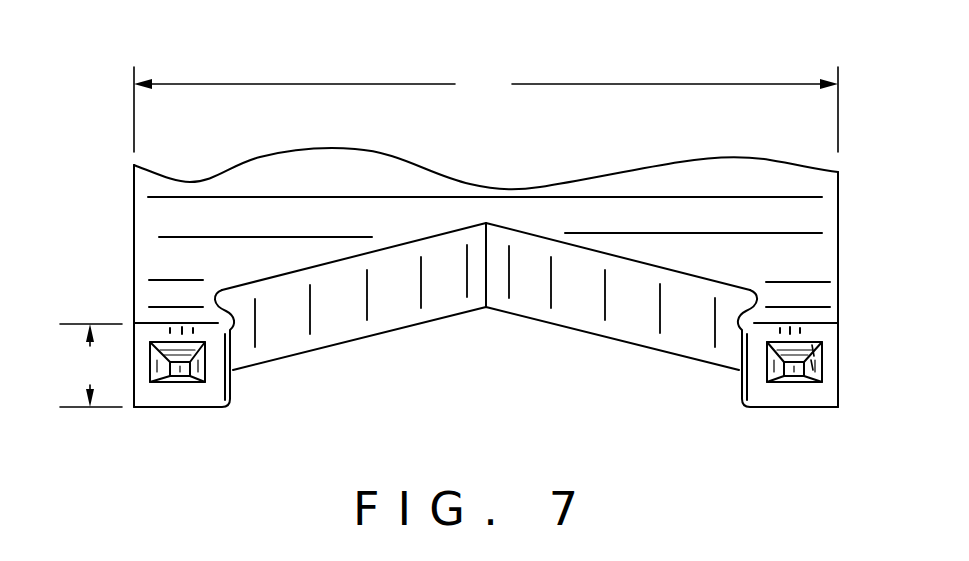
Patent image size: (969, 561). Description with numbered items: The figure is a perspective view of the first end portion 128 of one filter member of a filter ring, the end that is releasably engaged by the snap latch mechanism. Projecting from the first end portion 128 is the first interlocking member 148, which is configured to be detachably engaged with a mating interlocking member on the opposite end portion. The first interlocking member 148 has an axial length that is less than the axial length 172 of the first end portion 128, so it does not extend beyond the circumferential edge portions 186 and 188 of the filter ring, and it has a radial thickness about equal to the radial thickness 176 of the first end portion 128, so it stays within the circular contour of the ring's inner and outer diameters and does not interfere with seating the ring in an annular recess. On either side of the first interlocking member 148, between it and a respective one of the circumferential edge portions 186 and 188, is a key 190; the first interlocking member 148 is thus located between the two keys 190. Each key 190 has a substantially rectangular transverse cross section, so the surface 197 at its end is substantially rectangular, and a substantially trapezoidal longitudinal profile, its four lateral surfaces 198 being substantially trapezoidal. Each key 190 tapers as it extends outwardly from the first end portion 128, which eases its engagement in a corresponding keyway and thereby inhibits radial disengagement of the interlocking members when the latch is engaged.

The first end portion 128 is at (95, 119).
The first interlocking member 148 is at (468, 345).
The axial length 172 is at (486, 109).
The radial thickness 176 is at (91, 365).
The circumferential edge portion 186 is at (838, 252).
The circumferential edge portion 188 is at (134, 253).
The key 190 is at (178, 382).
The end surface 197 is at (795, 380).
The lateral surfaces 198 is at (814, 364).